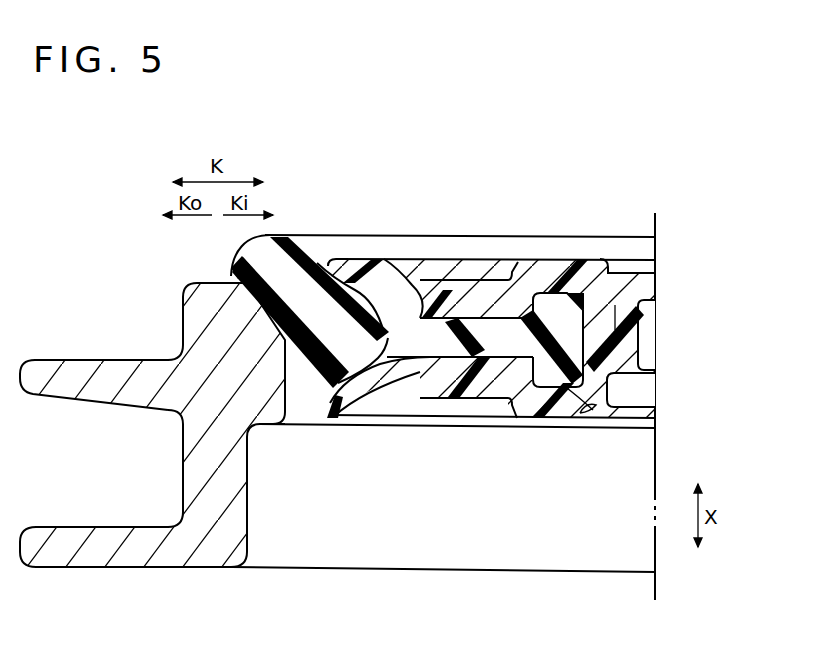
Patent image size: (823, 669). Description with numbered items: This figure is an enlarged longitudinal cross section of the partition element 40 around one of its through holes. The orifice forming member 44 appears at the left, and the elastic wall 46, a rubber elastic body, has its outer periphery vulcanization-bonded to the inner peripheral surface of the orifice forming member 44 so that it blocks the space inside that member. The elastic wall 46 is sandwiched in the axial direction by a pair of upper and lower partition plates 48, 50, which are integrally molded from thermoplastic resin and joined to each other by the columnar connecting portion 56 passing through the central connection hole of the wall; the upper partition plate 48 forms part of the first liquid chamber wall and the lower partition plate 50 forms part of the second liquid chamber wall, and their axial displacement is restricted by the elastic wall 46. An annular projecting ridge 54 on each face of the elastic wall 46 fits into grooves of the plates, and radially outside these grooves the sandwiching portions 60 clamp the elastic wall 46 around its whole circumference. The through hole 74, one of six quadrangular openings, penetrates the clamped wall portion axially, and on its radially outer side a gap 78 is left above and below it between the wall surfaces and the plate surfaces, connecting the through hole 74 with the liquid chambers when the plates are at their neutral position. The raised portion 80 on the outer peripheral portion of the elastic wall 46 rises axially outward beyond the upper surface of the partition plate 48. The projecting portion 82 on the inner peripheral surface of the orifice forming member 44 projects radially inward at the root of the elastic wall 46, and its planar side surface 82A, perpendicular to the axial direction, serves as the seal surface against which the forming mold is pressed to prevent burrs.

The sealing device 40 is at (571, 157).
The orifice forming member 44 is at (87, 360).
The elastic wall 46 is at (310, 288).
The partition plate 48 is at (600, 268).
The partition plate 50 is at (590, 417).
The projecting ridge 54 is at (585, 387).
The connecting portion 56 is at (628, 340).
The sandwiching portion 60 is at (463, 290).
The through hole 74 is at (428, 343).
The gap 78 is at (325, 262).
The raised portion 80 is at (235, 258).
The projecting portion 82 is at (277, 408).
The side surface 82A is at (275, 439).